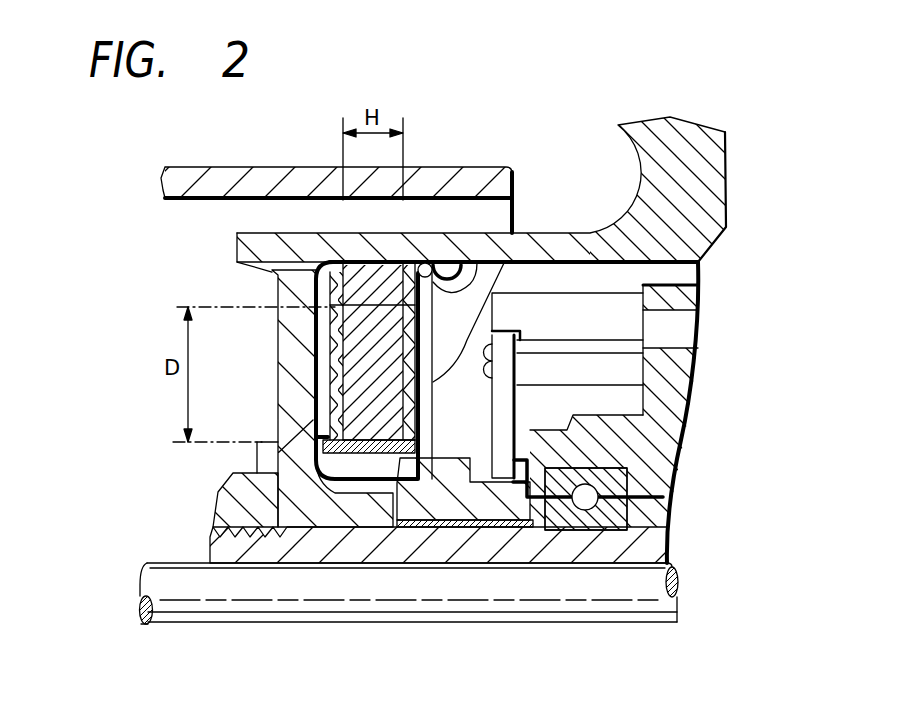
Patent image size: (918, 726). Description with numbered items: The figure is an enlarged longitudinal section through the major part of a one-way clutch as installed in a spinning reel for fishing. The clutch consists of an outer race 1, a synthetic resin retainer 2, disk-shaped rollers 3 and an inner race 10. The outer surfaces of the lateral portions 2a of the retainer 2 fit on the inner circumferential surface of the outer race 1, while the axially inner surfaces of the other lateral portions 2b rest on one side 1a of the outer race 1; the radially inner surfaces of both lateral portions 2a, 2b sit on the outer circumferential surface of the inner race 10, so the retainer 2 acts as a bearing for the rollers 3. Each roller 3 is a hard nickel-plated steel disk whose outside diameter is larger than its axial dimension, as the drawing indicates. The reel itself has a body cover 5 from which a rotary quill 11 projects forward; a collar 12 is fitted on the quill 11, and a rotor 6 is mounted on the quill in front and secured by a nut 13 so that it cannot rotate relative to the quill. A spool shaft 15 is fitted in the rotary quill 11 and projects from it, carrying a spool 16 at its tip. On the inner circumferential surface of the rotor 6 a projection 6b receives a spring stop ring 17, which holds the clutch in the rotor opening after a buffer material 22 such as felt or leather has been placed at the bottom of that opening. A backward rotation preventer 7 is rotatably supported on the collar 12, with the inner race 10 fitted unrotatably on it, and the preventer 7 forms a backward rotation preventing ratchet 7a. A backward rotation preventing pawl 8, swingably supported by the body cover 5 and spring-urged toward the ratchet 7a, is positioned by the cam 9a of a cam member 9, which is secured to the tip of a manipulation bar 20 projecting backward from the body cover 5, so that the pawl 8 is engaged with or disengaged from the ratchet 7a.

The outer race 1 is at (339, 281).
The side of the outer race 1a is at (343, 275).
The retainer 2 is at (326, 331).
The lateral portions of the retainer 2a is at (505, 262).
The other lateral portions of the retainer 2b is at (337, 402).
The disk-shaped roller 3 is at (350, 415).
The body cover 5 is at (702, 291).
The rotor 6 is at (727, 193).
The projection of the rotor 6b is at (460, 300).
The backward rotation preventer 7 is at (500, 521).
The backward rotation preventing ratchet 7a is at (530, 455).
The backward rotation preventing pawl 8 is at (518, 399).
The cam member 9 is at (567, 293).
The cam 9a is at (505, 350).
The inner race 10 is at (330, 452).
The rotary quill 11 is at (655, 538).
The collar 12 is at (443, 527).
The nut 13 is at (227, 500).
The spool shaft 15 is at (147, 565).
The spool 16 is at (190, 163).
The stop ring 17 is at (480, 305).
The manipulation bar 20 is at (690, 323).
The buffer material 22 is at (326, 295).